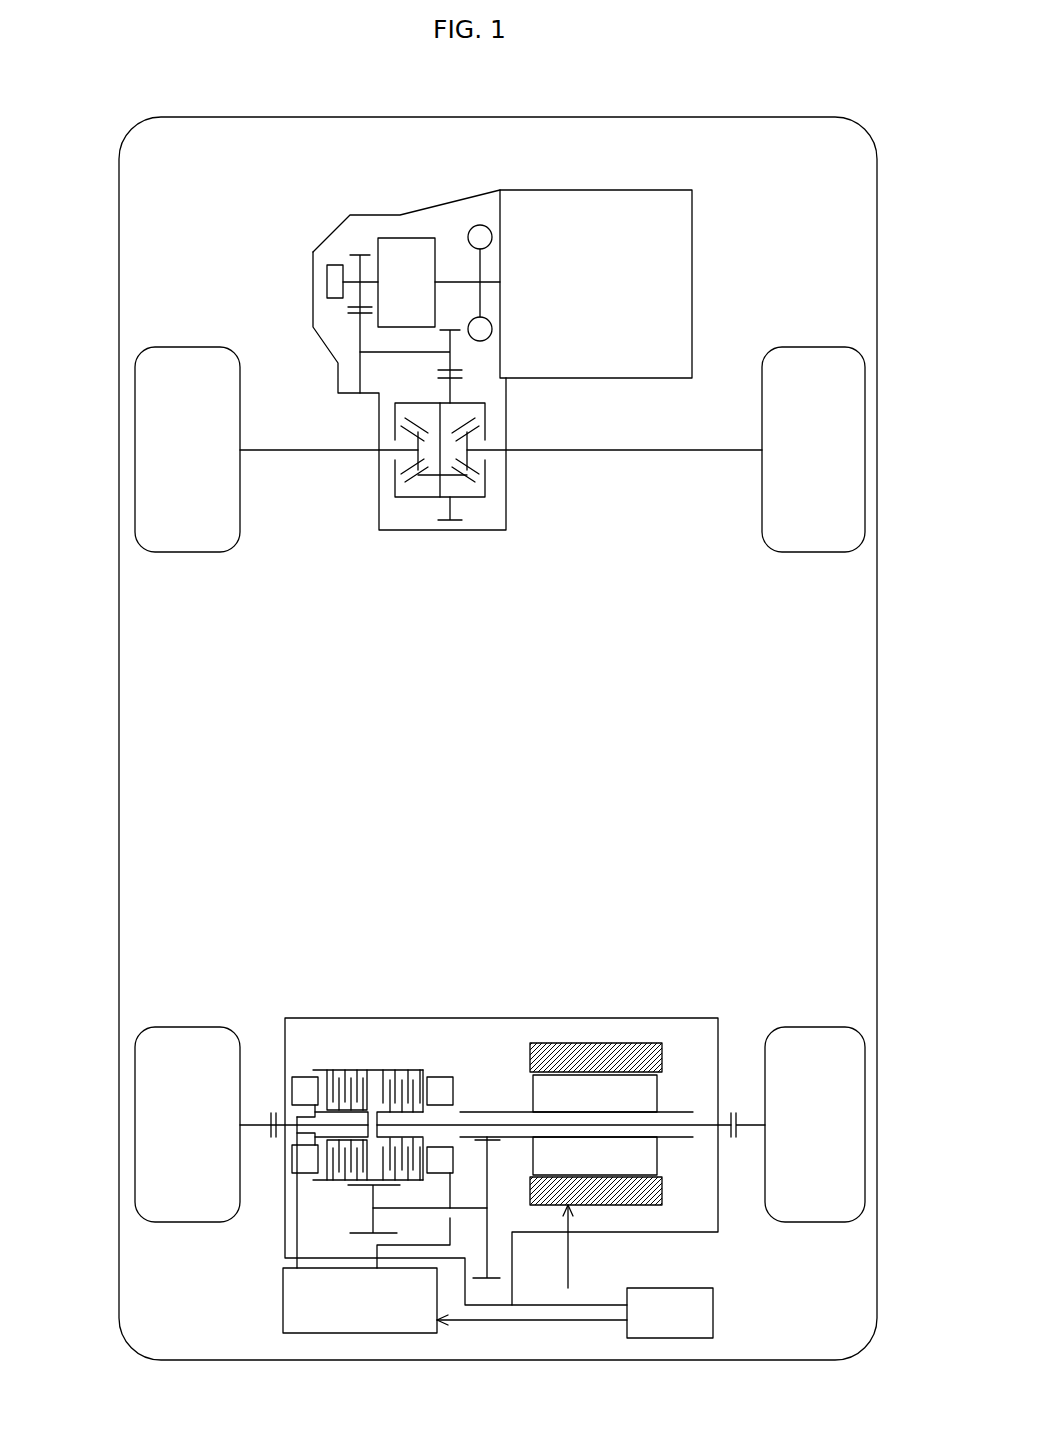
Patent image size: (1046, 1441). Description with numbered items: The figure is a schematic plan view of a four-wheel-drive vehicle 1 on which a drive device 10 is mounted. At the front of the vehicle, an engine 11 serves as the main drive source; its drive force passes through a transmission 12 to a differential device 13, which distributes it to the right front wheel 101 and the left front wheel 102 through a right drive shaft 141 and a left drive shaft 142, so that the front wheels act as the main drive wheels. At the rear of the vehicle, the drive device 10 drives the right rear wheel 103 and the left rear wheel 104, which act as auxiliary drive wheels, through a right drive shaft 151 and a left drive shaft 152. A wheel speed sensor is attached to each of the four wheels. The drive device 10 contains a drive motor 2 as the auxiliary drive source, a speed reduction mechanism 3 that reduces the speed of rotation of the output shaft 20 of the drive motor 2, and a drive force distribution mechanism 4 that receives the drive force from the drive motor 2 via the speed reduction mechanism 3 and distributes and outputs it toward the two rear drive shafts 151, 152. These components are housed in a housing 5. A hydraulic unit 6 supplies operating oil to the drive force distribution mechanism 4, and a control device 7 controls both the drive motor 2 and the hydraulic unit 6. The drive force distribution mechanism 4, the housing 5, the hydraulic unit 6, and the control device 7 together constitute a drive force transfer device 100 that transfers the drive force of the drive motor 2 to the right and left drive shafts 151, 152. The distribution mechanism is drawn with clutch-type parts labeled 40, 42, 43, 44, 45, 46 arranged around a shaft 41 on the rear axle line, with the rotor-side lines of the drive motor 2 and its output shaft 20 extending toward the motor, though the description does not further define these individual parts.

The four-wheel-drive vehicle 1 is at (883, 112).
The drive motor 2 is at (673, 1052).
The speed reduction mechanism 3 is at (342, 1218).
The drive force distribution mechanism 4 is at (330, 1186).
The housing 5 is at (610, 1018).
The hydraulic unit 6 is at (283, 1300).
The control device 7 is at (678, 1288).
The drive device 10 is at (682, 997).
The engine 11 is at (632, 190).
The transmission 12 is at (378, 224).
The differential device 13 is at (405, 500).
The output shaft 20 is at (672, 1140).
The clutch 40 is at (320, 1068).
The shaft 41 is at (703, 1130).
The clutch 42 is at (293, 1130).
The clutch plate 43 is at (401, 1068).
The clutch plate 44 is at (348, 1068).
The piston 45 is at (440, 1066).
The piston 46 is at (307, 1066).
The drive force transfer device 100 is at (408, 1094).
The right front wheel 101 is at (868, 447).
The left front wheel 102 is at (135, 443).
The right rear wheel 103 is at (865, 1120).
The left rear wheel 104 is at (135, 1120).
The right drive shaft 141 is at (620, 450).
The left drive shaft 142 is at (333, 450).
The right drive shaft 151 is at (745, 1110).
The left drive shaft 152 is at (265, 1118).